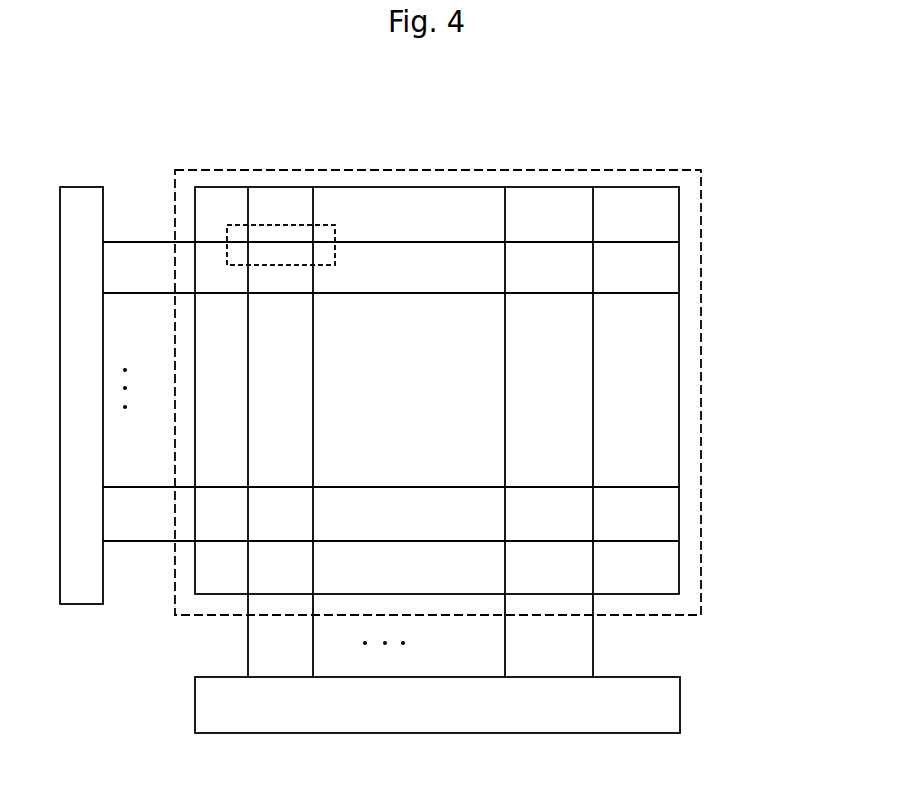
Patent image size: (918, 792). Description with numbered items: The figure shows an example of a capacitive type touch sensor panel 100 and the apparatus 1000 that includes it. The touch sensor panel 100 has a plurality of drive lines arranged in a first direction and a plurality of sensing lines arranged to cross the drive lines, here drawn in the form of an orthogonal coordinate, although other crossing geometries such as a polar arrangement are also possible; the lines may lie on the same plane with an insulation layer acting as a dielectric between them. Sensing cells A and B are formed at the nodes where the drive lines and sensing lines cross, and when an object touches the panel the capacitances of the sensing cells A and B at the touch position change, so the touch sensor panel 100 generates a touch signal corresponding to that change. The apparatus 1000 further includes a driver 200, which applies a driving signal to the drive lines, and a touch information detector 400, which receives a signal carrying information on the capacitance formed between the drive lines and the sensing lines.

The apparatus 1000 is at (712, 161).
The touch sensor panel 100 is at (701, 213).
The driver 200 is at (82, 187).
The touch information detector 400 is at (681, 705).
The sensing cell A is at (228, 228).
The sensing cell B is at (335, 228).